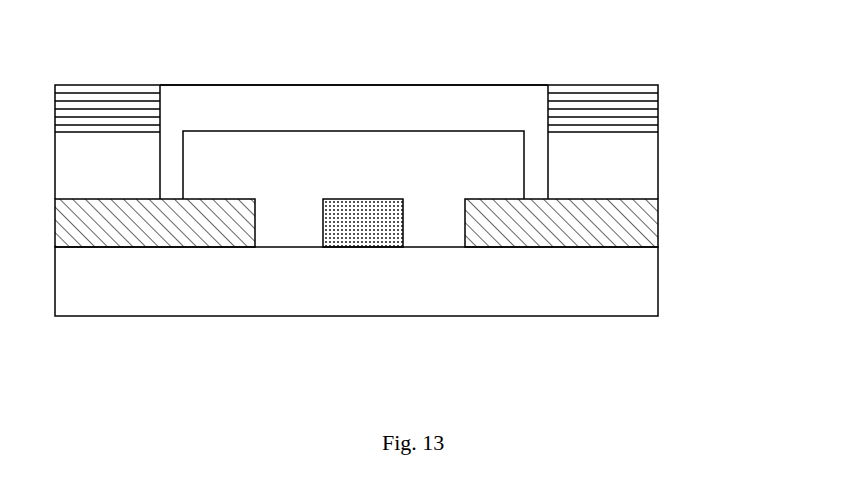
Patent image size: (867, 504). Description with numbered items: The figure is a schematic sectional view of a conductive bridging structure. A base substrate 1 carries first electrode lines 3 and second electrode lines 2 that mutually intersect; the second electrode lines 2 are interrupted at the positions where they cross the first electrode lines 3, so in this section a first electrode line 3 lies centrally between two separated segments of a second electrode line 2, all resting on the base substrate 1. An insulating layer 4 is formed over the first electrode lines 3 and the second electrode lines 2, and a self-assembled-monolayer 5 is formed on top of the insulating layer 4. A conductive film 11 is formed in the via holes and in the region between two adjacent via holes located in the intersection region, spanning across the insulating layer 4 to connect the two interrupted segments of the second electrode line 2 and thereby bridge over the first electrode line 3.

The base substrate 1 is at (658, 290).
The second electrode line 2 is at (658, 226).
The first electrode line 3 is at (364, 247).
The insulating layer 4 is at (658, 163).
The self-assembled-monolayer 5 is at (658, 105).
The conductive film 11 is at (406, 104).